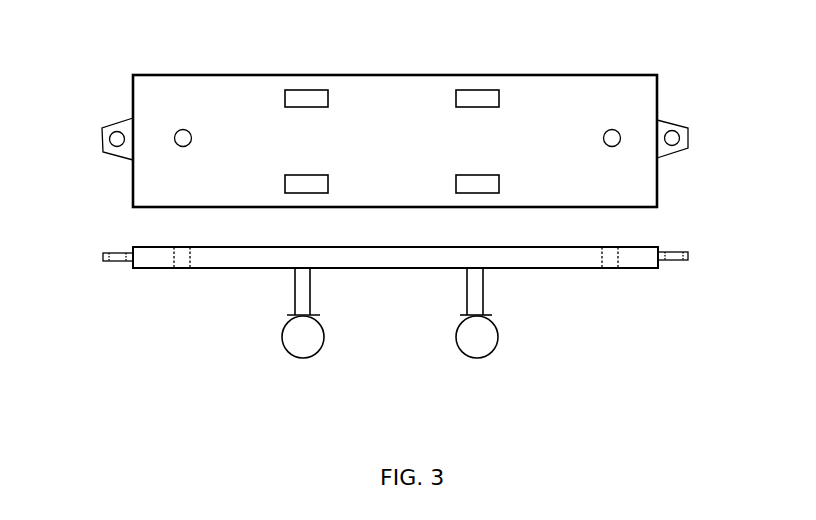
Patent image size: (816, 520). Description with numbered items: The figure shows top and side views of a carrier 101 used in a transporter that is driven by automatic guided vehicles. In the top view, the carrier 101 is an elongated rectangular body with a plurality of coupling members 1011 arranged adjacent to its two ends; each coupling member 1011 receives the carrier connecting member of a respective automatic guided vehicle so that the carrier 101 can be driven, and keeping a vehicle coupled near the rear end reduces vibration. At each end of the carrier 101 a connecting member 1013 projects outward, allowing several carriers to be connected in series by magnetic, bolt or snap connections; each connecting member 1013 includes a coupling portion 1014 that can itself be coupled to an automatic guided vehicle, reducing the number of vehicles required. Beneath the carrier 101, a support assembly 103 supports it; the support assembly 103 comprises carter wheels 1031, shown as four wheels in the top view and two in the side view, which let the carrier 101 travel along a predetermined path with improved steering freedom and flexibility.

The carrier 101 is at (532, 90).
The coupling member 1011 is at (183, 129).
The connecting member 1013 is at (108, 150).
The coupling portion 1014 is at (118, 132).
The support assembly 103 is at (375, 208).
The carter wheel 1031 is at (315, 100).